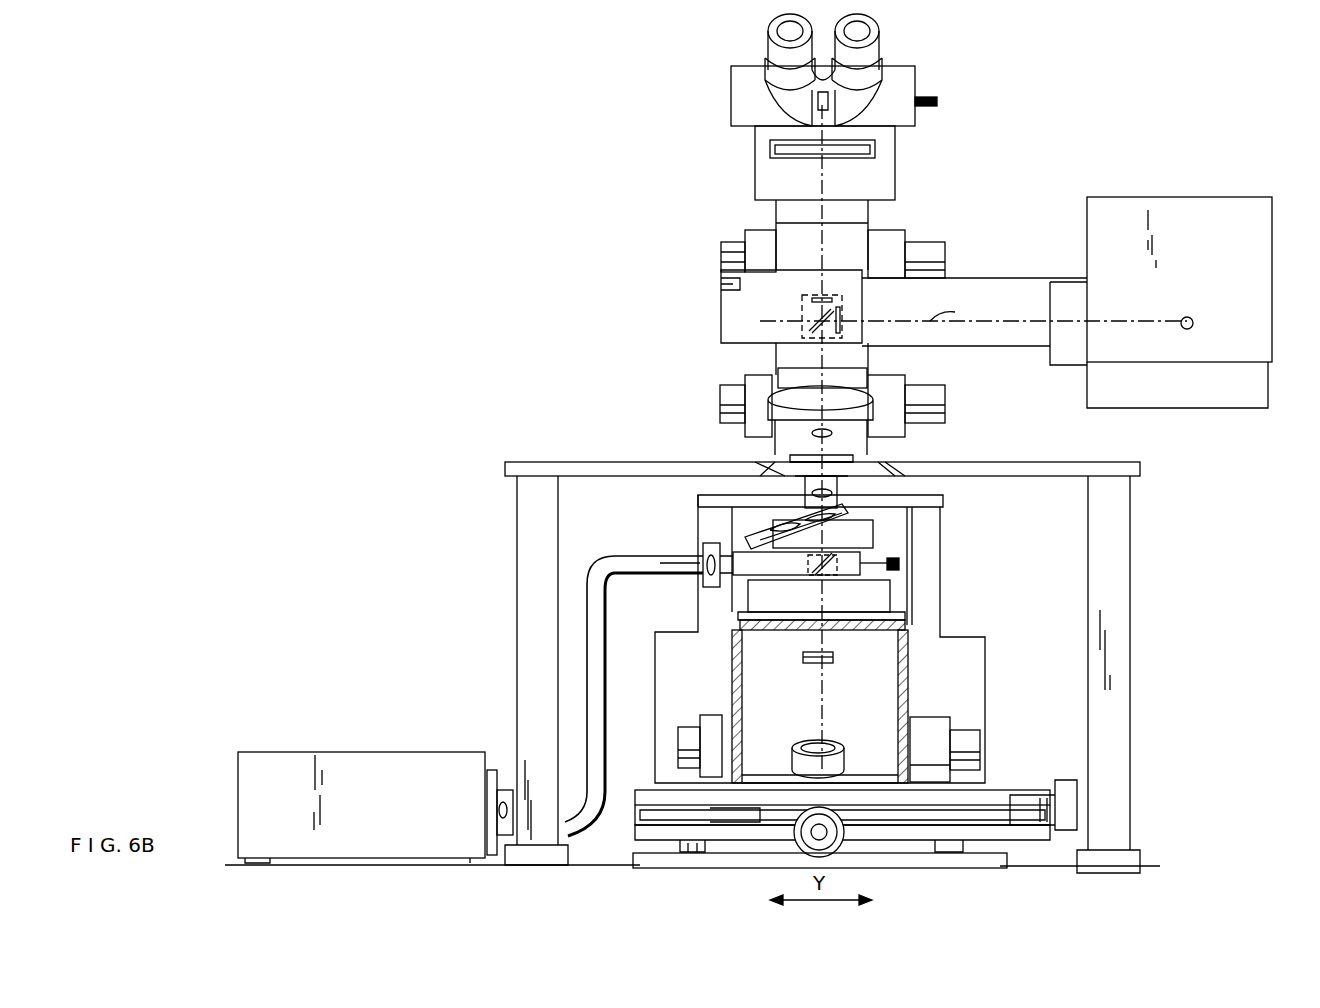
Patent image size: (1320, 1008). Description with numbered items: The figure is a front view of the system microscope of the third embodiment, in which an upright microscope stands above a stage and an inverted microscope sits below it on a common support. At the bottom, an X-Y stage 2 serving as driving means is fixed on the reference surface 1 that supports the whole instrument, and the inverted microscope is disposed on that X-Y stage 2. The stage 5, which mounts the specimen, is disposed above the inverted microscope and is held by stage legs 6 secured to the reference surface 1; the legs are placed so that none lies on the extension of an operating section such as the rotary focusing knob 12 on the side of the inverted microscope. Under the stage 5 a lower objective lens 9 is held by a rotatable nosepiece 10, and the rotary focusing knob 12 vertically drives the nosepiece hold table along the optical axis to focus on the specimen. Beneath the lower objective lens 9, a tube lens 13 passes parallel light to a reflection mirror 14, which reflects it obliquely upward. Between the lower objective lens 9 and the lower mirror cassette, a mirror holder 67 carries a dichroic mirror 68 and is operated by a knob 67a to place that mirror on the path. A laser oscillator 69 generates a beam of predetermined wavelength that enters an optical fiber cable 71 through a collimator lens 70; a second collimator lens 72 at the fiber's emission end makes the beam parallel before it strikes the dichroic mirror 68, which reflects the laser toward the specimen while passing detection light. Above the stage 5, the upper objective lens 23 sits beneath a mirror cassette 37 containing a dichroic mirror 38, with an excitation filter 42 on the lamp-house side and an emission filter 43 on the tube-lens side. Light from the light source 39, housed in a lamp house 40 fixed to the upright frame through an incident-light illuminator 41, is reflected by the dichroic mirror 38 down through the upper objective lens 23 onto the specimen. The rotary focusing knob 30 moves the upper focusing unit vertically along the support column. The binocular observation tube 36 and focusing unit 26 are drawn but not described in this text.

The binocular eyepiece unit 36 is at (882, 58).
The rotary focusing knob 30 is at (928, 260).
The mirror cassette 37 is at (802, 322).
The dichroic mirror 38 is at (808, 330).
The excitation filter 42 is at (842, 318).
The emission filter 43 is at (828, 298).
The incident-light illuminator 41 is at (1030, 292).
The lamp house 40 is at (1192, 210).
The light source 39 is at (1187, 316).
The focusing knob assembly 26 is at (945, 416).
The upper objective lens 23 is at (848, 452).
The lower objective lens 9 is at (800, 480).
The stage 5 is at (598, 462).
The stage legs 6 is at (517, 620).
The optical fiber cable 71 is at (617, 568).
The collimator lens 72 is at (700, 552).
The nosepiece 10 is at (860, 525).
The mirror holder 67 is at (865, 556).
The knob 67a is at (899, 564).
The dichroic mirror 68 is at (826, 575).
The tube lens 13 is at (830, 664).
The reflection mirror 14 is at (838, 744).
The rotary focusing knob 12 is at (934, 728).
The X-Y stage 2 is at (1002, 783).
The reference surface 1 is at (608, 853).
The laser oscillator 69 is at (357, 760).
The collimator lens 70 is at (503, 790).